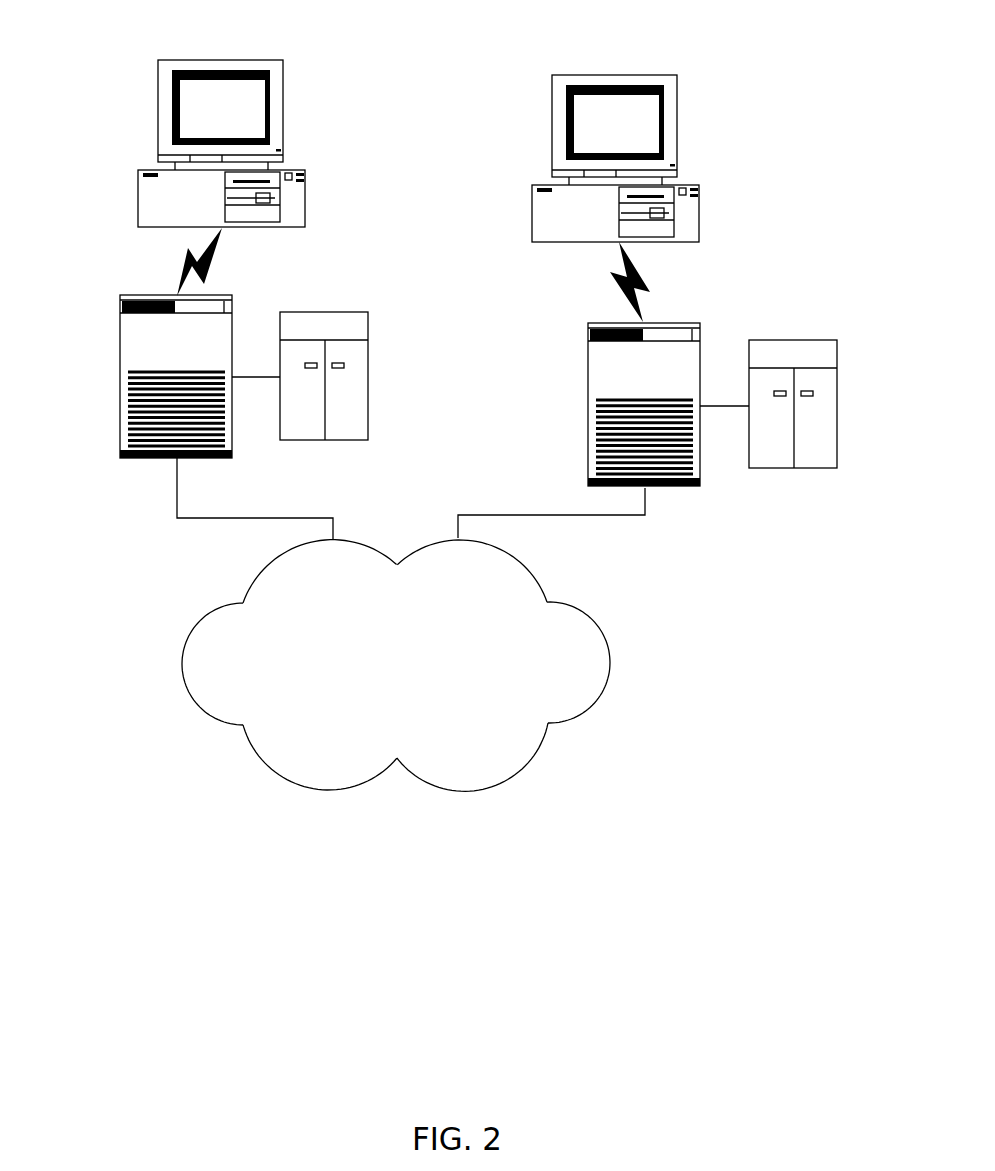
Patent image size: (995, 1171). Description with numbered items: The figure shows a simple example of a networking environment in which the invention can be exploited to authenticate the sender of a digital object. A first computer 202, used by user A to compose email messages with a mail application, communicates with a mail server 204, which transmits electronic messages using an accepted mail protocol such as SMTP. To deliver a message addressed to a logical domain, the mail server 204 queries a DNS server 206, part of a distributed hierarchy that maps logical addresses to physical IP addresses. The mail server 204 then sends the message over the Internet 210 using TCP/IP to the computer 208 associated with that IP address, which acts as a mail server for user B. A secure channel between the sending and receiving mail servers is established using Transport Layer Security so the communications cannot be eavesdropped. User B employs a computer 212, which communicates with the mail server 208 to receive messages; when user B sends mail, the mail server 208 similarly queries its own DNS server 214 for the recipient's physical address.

The first computer 202 is at (172, 56).
The mail server 204 is at (117, 317).
The DNS server 206 is at (343, 389).
The computer 208 is at (598, 320).
The Internet 210 is at (377, 686).
The computer 212 is at (580, 76).
The DNS server 214 is at (810, 415).